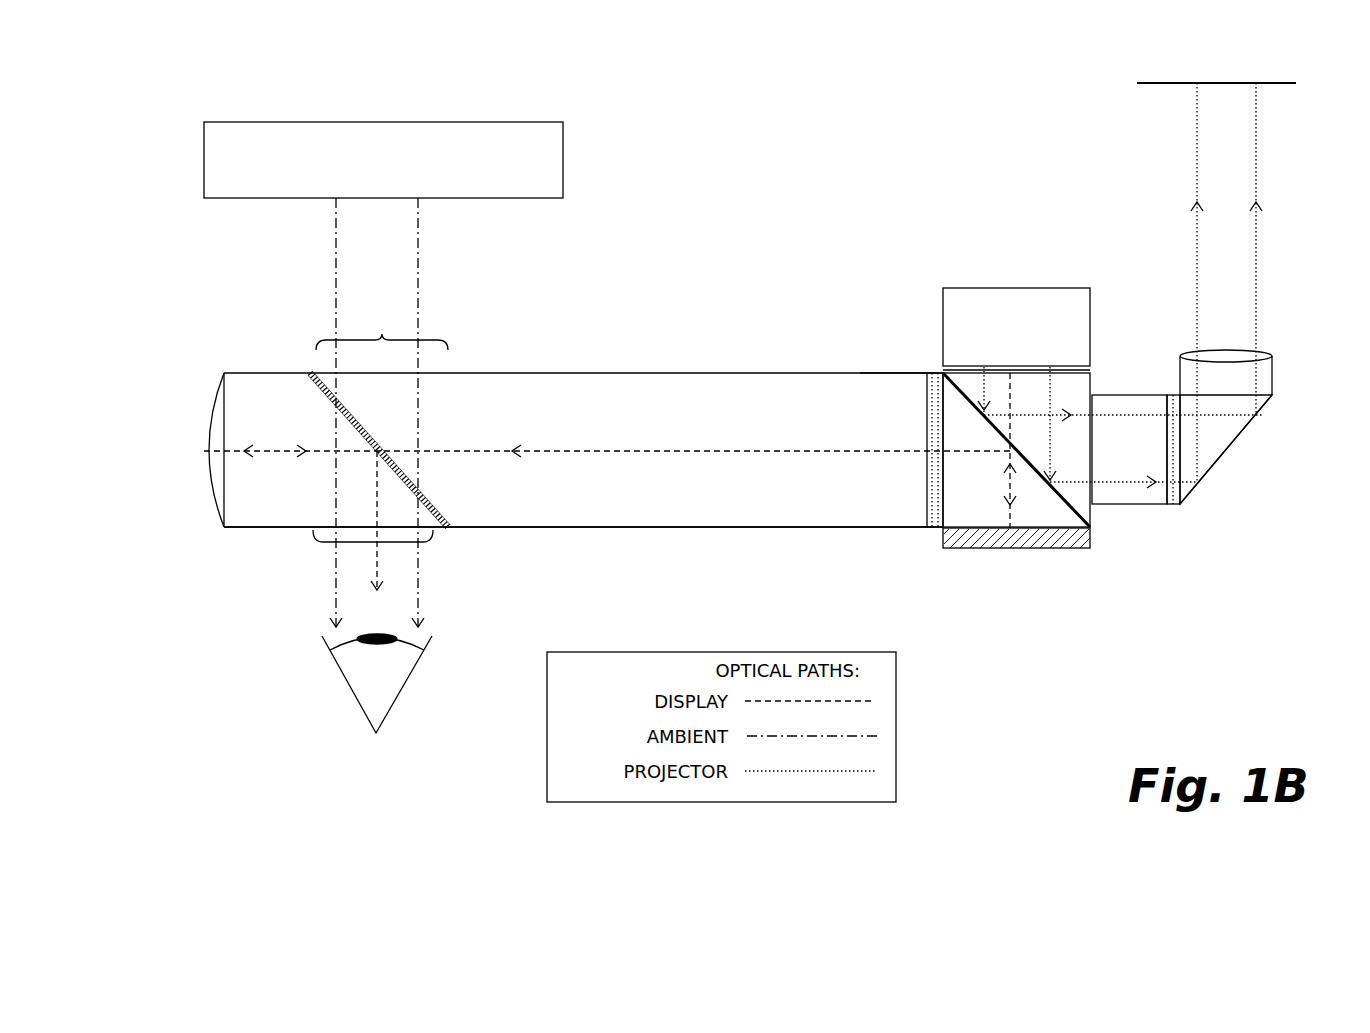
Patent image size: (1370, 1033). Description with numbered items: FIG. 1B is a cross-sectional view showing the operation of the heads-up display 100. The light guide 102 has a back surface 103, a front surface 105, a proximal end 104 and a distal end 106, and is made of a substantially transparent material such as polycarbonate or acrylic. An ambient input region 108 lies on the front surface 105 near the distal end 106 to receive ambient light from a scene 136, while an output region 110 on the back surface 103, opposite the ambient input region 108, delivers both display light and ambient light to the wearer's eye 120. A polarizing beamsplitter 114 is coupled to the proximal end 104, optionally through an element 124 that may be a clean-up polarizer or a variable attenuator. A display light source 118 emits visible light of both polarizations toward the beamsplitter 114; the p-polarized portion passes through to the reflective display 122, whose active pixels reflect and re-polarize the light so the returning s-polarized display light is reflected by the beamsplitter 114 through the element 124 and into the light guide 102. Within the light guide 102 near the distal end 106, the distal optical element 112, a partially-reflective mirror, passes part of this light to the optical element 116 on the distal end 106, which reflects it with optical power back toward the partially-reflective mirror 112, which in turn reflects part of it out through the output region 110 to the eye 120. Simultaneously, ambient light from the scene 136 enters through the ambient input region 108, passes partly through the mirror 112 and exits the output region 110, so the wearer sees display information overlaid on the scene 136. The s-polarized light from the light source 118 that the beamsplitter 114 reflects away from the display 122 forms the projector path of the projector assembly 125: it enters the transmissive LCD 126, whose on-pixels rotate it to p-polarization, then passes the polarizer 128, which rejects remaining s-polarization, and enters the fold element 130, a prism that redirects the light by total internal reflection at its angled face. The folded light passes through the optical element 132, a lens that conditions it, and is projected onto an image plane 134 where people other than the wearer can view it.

The heads-up display 100 is at (765, 230).
The light guide 102 is at (697, 510).
The back surface 103 is at (594, 528).
The proximal end 104 is at (1237, 571).
The front surface 105 is at (860, 372).
The distal end 106 is at (130, 533).
The ambient input region 108 is at (411, 335).
The output region 110 is at (322, 545).
The distal optical element 112 is at (447, 512).
The beamsplitter 114 is at (963, 414).
The optical element 116 is at (216, 405).
The display light source 118 is at (1016, 327).
The eye / diffuser 120 is at (368, 690).
The display 122 is at (1037, 533).
The element 124 is at (928, 530).
The projector assembly 125 is at (1252, 437).
The liquid crystal display 126 is at (1129, 449).
The polarizer 128 is at (1173, 506).
The fold element 130 is at (1225, 450).
The optical element 132 is at (1272, 356).
The image plane 134 is at (1140, 84).
The scene 136 is at (383, 160).